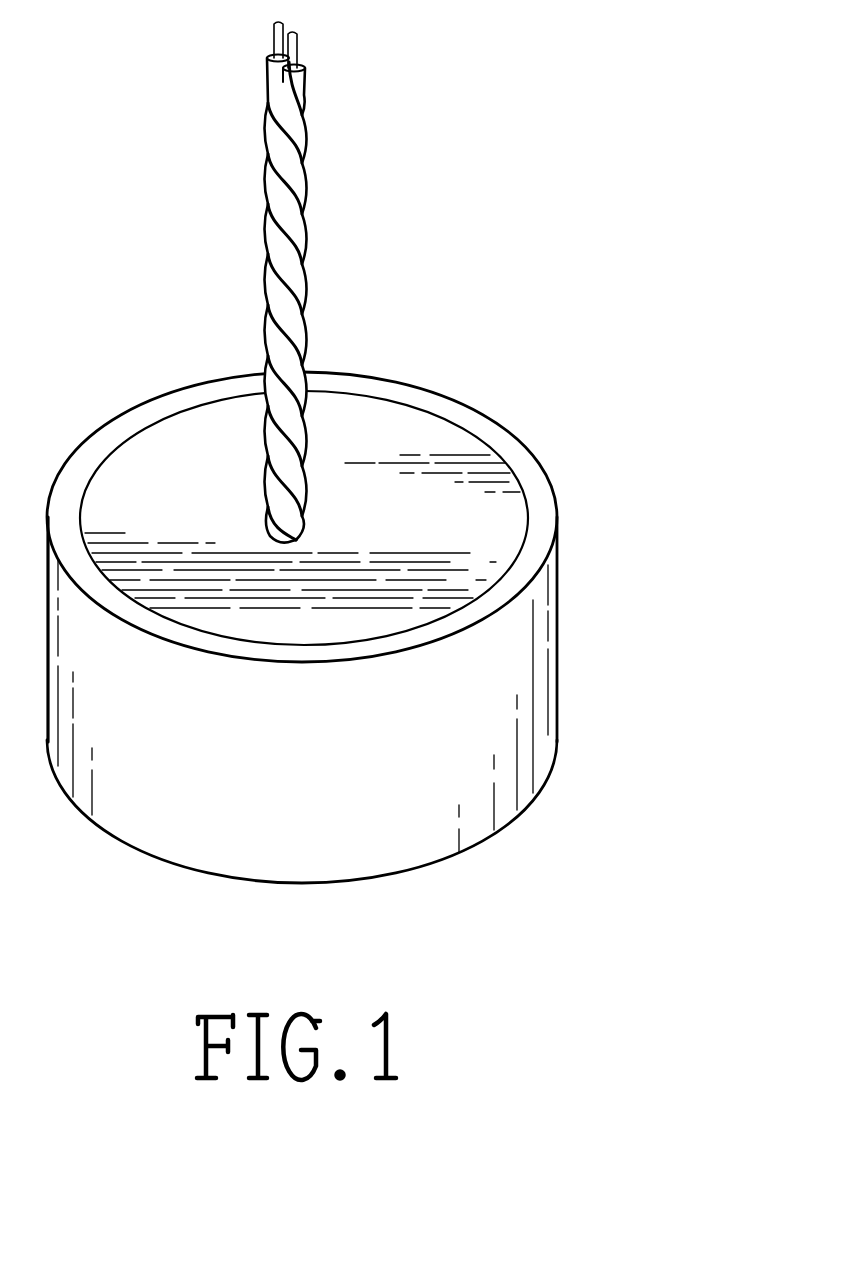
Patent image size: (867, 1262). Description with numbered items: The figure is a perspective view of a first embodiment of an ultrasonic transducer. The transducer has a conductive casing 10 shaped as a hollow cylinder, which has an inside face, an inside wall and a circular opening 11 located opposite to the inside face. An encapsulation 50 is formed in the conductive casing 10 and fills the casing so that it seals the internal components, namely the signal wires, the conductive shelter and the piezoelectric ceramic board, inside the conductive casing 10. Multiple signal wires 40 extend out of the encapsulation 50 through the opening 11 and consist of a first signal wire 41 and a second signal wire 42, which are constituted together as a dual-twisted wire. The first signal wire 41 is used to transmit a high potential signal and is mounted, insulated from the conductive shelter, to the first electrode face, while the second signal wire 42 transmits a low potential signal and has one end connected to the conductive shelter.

The conductive casing 10 is at (520, 683).
The opening 11 is at (490, 446).
The encapsulation 50 is at (490, 510).
The signal wires 40 is at (315, 165).
The first signal wire 41 is at (303, 80).
The second signal wire 42 is at (277, 93).